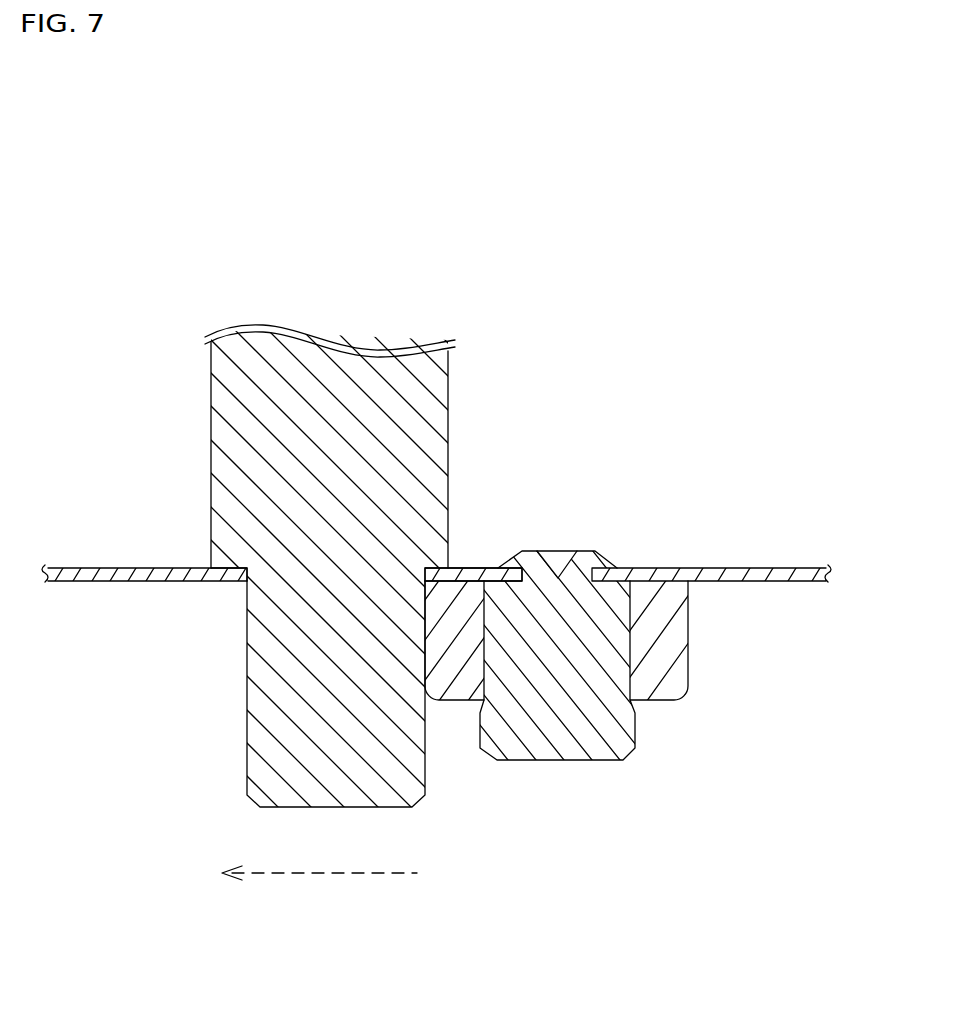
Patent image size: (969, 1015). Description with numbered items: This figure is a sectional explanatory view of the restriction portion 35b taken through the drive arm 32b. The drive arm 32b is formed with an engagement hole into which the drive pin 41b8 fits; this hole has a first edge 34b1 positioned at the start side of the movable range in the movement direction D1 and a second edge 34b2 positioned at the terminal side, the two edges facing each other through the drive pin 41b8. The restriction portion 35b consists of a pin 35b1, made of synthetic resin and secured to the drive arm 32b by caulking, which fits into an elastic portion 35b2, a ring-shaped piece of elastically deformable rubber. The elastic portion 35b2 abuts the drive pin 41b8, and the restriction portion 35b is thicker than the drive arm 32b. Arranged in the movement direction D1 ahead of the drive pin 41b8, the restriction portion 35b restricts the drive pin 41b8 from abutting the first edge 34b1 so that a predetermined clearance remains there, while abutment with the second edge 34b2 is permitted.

The drive pin 41b8 is at (262, 431).
The first edge 34b1 is at (472, 573).
The second edge 34b2 is at (247, 582).
The drive arm 32b is at (735, 582).
The restriction portion 35b is at (550, 742).
The pin 35b1 is at (552, 722).
The elastic portion 35b2 is at (663, 700).
The movement direction D1 is at (343, 876).